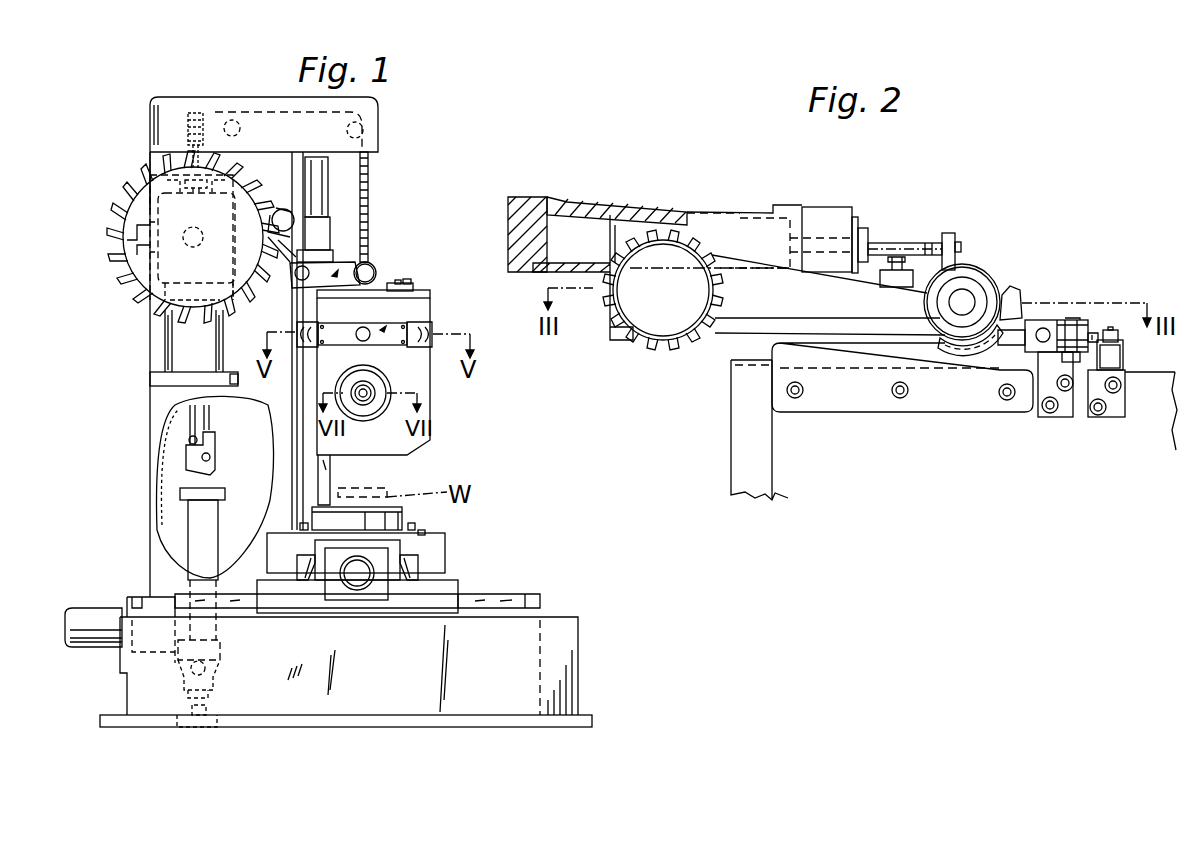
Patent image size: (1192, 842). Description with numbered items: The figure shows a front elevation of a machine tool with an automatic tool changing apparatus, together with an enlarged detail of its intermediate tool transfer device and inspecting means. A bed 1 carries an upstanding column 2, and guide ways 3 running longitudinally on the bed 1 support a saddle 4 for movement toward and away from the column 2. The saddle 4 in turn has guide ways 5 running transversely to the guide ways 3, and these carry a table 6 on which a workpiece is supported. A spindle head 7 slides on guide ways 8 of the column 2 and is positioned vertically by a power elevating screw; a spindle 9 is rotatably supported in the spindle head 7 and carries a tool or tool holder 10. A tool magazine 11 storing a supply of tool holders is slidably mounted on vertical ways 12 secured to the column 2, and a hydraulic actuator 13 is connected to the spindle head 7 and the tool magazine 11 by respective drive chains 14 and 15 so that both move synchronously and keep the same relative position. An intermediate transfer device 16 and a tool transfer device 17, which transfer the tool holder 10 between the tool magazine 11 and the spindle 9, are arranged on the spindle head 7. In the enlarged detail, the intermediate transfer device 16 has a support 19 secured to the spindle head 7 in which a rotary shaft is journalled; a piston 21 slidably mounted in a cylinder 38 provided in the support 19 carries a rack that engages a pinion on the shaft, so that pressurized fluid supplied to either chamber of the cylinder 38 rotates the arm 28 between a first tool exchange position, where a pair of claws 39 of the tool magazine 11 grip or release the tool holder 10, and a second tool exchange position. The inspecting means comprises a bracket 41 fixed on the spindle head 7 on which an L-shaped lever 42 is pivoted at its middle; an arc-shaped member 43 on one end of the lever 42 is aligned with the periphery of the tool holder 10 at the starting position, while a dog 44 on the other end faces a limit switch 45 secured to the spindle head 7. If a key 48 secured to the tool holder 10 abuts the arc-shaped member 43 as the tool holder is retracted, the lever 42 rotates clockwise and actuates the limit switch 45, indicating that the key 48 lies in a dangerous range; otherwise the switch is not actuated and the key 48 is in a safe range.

In FIG. 1, the bed 1 is at (382, 718).
In FIG. 1, the column 2 is at (160, 406).
In FIG. 1, the guide ways 3 is at (505, 600).
In FIG. 1, the saddle 4 is at (443, 590).
In FIG. 1, the guide ways 5 is at (303, 592).
In FIG. 1, the table 6 is at (437, 548).
In FIG. 1, the spindle head 7 is at (412, 447).
In FIG. 2, the spindle head 7 is at (748, 420).
In FIG. 1, the guide ways 8 is at (330, 478).
In FIG. 1, the spindle 9 is at (385, 378).
In FIG. 1, the tool holder 10 is at (375, 390).
In FIG. 2, the tool holder 10 is at (975, 290).
In FIG. 1, the tool magazine 11 is at (130, 268).
In FIG. 1, the vertical ways 12 is at (222, 352).
In FIG. 1, the hydraulic actuator 13 is at (193, 520).
In FIG. 1, the drive chain 14 is at (372, 175).
In FIG. 1, the drive chain 15 is at (185, 140).
In FIG. 1, the intermediate transfer device 16 is at (377, 260).
In FIG. 2, the intermediate transfer device 16 is at (624, 352).
In FIG. 1, the tool transfer device 17 is at (425, 320).
In FIG. 2, the support 19 is at (772, 205).
In FIG. 2, the piston 21 is at (676, 196).
In FIG. 2, the arm 28 is at (692, 366).
In FIG. 2, the cylinder 38 is at (594, 195).
In FIG. 1, the claws 39 is at (130, 250).
In FIG. 2, the bracket 41 is at (1066, 405).
In FIG. 2, the L-shaped lever 42 is at (1046, 330).
In FIG. 2, the arc-shaped member 43 is at (1012, 325).
In FIG. 2, the dog 44 is at (1105, 330).
In FIG. 2, the limit switch 45 is at (1113, 355).
In FIG. 2, the key 48 is at (1002, 298).